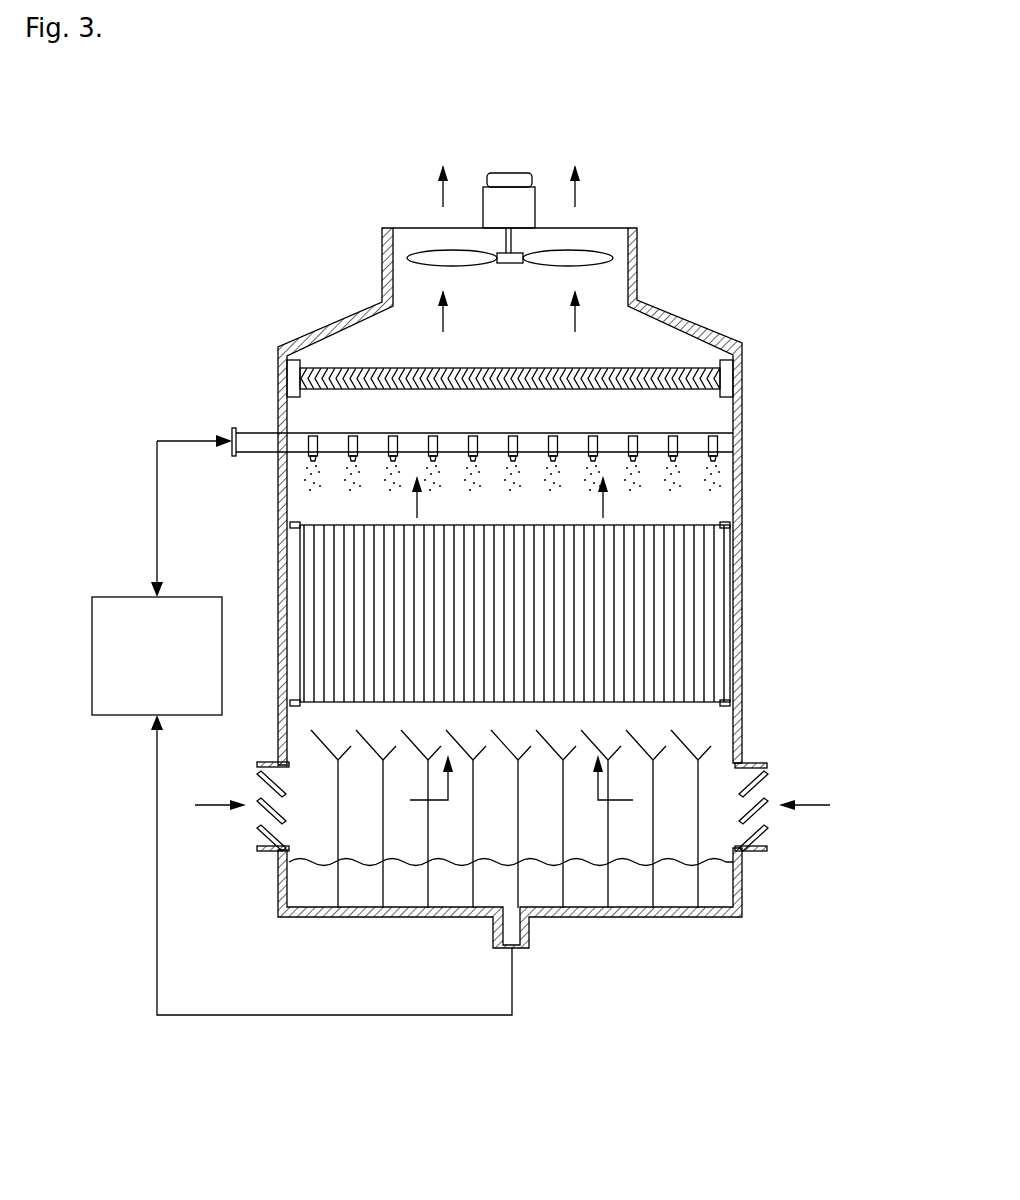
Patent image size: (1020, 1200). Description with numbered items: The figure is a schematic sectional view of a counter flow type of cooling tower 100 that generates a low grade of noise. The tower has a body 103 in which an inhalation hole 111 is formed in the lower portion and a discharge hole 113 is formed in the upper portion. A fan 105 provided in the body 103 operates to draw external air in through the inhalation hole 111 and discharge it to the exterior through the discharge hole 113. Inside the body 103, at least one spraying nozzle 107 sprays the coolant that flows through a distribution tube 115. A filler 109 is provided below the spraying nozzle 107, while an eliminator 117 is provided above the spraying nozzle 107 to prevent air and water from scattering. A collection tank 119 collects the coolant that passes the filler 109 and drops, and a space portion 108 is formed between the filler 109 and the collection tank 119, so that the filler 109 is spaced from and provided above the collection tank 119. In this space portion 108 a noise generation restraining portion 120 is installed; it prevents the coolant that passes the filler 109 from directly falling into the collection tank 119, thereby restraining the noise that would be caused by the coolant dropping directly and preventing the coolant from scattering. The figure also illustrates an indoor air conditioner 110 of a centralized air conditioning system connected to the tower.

The cooling tower 100 is at (818, 181).
The body 103 is at (743, 470).
The fan 105 is at (436, 258).
The spraying nozzle 107 is at (310, 450).
The space portion 108 is at (705, 728).
The filler 109 is at (690, 606).
The indoor air conditioner 110 is at (125, 597).
The inhalation hole 111 is at (770, 785).
The discharge hole 113 is at (610, 235).
The distribution tube 115 is at (262, 440).
The eliminator 117 is at (345, 367).
The collection tank 119 is at (665, 907).
The noise generation restraining portion 120 is at (300, 882).